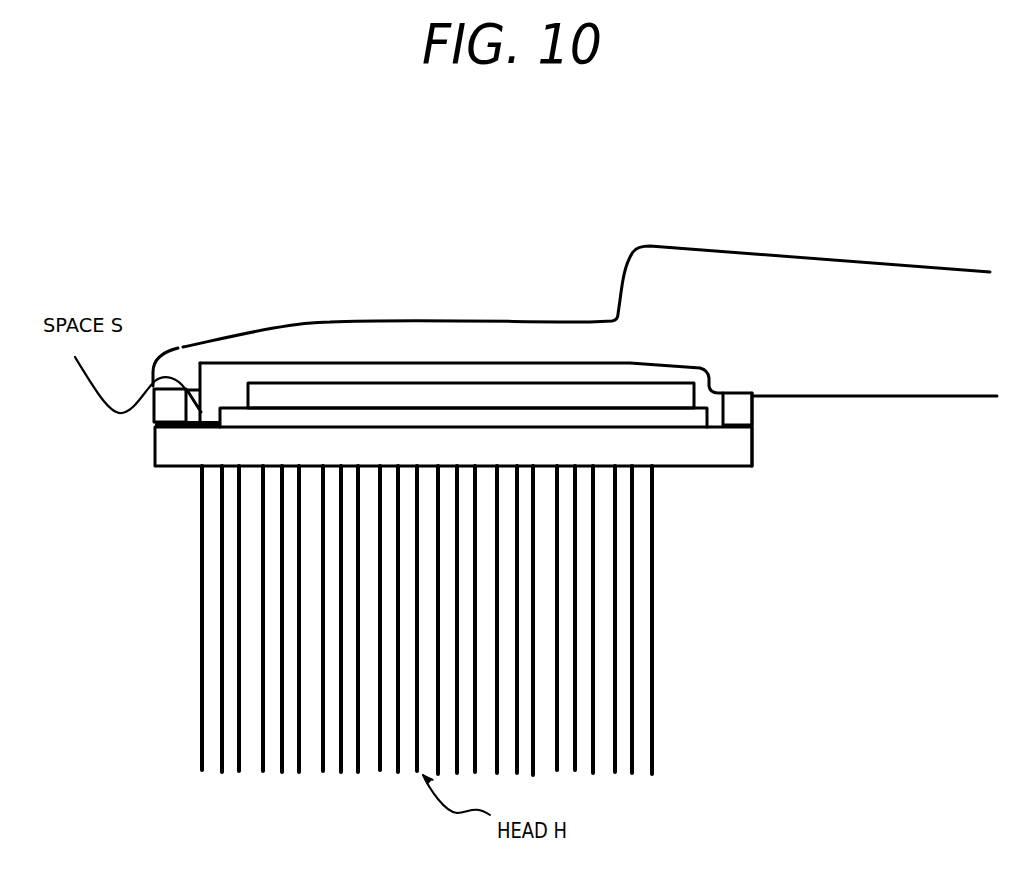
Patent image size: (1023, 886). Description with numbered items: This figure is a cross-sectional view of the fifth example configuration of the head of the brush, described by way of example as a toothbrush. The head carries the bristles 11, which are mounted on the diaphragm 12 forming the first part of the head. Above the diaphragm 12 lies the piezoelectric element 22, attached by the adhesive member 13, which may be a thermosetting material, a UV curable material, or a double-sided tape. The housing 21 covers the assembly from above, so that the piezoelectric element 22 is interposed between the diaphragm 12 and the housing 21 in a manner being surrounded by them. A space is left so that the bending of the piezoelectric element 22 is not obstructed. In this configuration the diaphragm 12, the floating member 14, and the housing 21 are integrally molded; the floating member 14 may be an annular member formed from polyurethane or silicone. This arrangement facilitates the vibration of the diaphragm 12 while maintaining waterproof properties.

The bristles 11 is at (280, 633).
The diaphragm 12 is at (655, 449).
The adhesive member 13 is at (238, 420).
The floating member 14 is at (737, 402).
The housing 21 is at (427, 345).
The piezoelectric element 22 is at (315, 398).